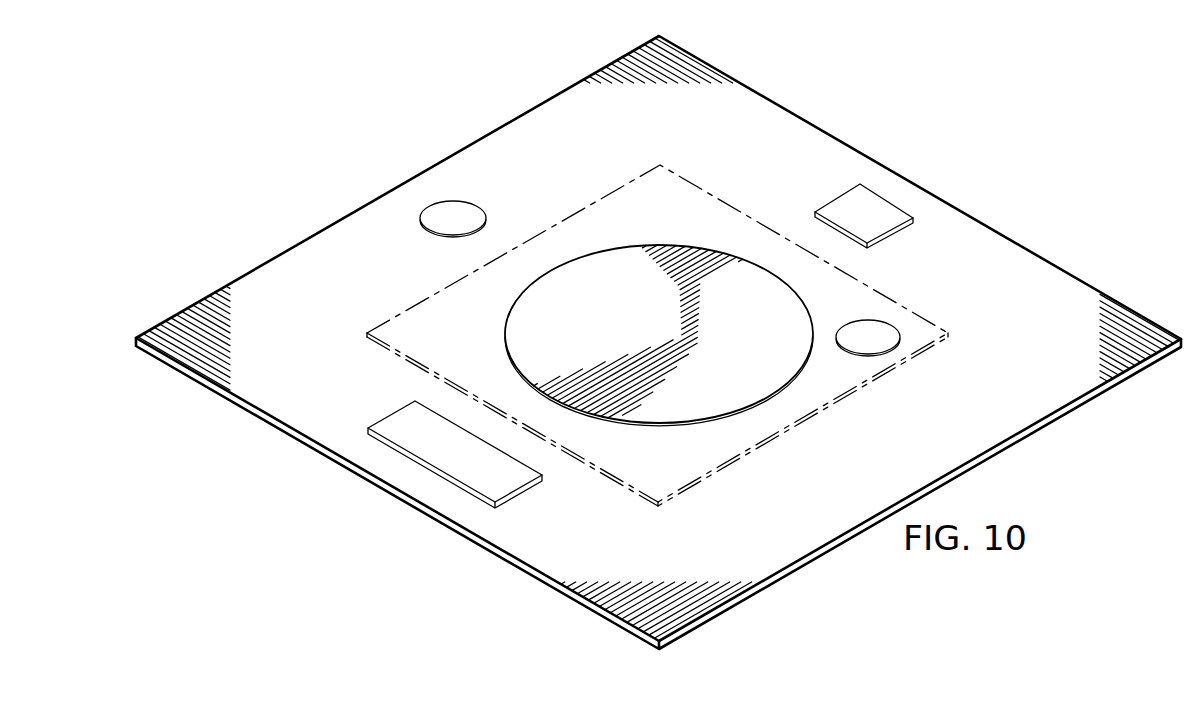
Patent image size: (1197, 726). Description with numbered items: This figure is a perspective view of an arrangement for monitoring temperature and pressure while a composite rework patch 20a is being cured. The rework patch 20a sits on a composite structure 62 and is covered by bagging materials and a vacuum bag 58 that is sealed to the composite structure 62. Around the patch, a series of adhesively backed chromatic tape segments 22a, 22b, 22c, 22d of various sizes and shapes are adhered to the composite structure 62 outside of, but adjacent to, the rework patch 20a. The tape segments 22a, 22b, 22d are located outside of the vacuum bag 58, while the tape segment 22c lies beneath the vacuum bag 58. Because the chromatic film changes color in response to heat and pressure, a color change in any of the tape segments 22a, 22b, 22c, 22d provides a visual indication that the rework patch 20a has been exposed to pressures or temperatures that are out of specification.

The composite structure 62 is at (996, 243).
The vacuum bag 58 is at (732, 462).
The composite rework patch 20a is at (527, 322).
The chromatic tape segment 22a is at (468, 212).
The chromatic tape segment 22b is at (847, 203).
The chromatic tape segment 22c is at (877, 328).
The chromatic tape segment 22d is at (400, 420).